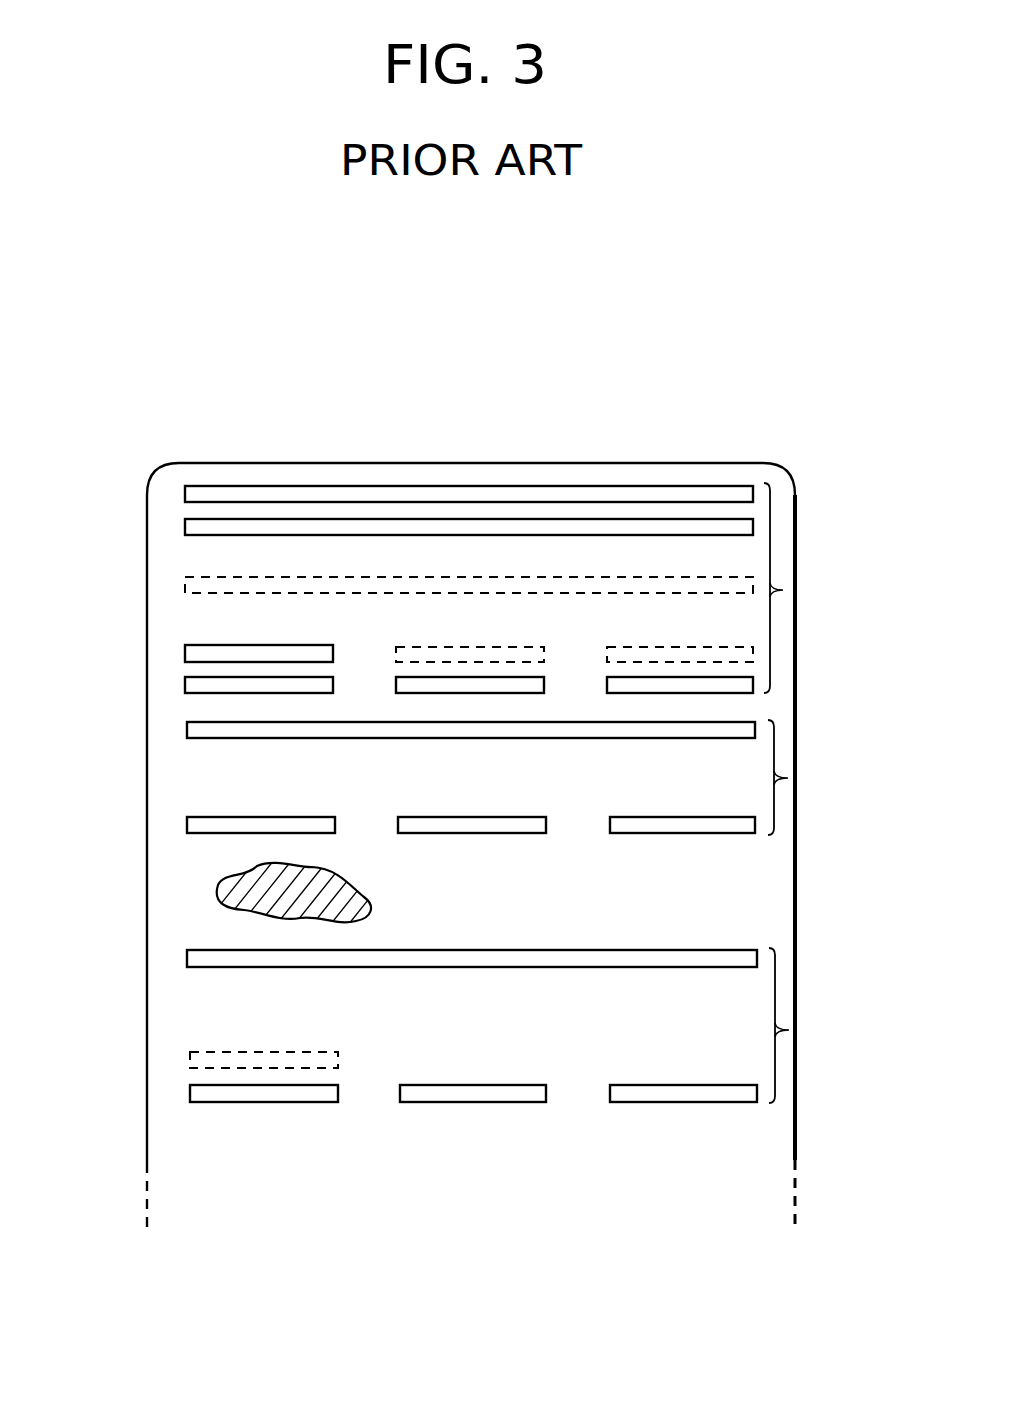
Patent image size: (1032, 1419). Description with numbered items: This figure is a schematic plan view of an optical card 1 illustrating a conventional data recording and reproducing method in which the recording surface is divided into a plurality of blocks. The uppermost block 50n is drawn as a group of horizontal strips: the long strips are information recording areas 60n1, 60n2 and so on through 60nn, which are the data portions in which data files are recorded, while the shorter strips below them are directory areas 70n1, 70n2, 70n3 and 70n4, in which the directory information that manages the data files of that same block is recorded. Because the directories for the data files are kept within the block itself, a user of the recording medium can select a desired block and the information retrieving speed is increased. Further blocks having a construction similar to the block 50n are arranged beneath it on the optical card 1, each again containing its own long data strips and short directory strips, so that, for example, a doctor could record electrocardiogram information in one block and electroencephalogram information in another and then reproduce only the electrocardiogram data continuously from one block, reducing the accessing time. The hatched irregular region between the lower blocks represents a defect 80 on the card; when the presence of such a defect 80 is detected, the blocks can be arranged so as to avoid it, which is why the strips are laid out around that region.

The optical card 1 is at (213, 463).
The information recording area 60n1 is at (757, 494).
The information recording area 60n2 is at (757, 527).
The information recording area 60nn is at (757, 585).
The block 50n is at (784, 590).
The directory area 70n1 is at (185, 683).
The directory area 70n2 is at (448, 695).
The directory area 70n3 is at (757, 686).
The directory area 70n4 is at (185, 655).
The defect 80 is at (352, 890).